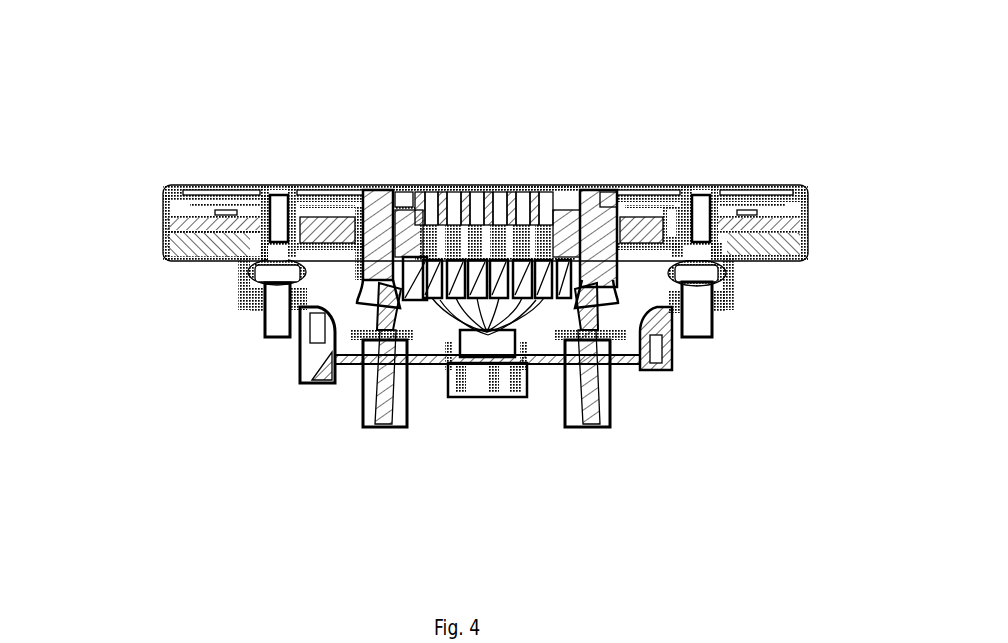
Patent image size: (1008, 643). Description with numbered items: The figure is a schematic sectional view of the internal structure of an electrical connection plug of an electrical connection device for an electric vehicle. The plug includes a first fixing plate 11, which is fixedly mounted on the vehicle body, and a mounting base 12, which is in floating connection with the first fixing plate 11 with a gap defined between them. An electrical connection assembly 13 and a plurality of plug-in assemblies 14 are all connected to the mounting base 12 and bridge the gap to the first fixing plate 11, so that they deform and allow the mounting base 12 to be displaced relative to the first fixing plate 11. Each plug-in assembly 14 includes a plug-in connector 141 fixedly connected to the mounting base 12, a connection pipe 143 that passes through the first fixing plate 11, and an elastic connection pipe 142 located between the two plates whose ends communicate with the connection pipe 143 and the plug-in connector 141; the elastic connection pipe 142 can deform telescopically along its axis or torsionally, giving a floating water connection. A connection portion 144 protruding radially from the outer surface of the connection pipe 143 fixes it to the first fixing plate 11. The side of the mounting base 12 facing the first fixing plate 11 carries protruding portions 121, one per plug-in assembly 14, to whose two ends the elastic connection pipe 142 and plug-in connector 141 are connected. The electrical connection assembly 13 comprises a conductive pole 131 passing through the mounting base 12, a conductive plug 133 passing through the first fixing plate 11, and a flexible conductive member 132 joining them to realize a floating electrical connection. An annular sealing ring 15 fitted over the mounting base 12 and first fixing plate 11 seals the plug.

The first fixing plate 11 is at (165, 250).
The mounting base 12 is at (231, 186).
The electrical connection assembly 13 is at (358, 410).
The plug-in assembly 14 is at (253, 333).
The annular sealing ring 15 is at (164, 236).
The protruding portion 121 is at (246, 250).
The conductive pole 131 is at (392, 186).
The flexible conductive member 132 is at (356, 320).
The conductive plug 133 is at (372, 425).
The plug-in connector 141 is at (291, 186).
The elastic connection pipe 142 is at (248, 272).
The connection pipe 143 is at (262, 337).
The connection portion 144 is at (250, 308).